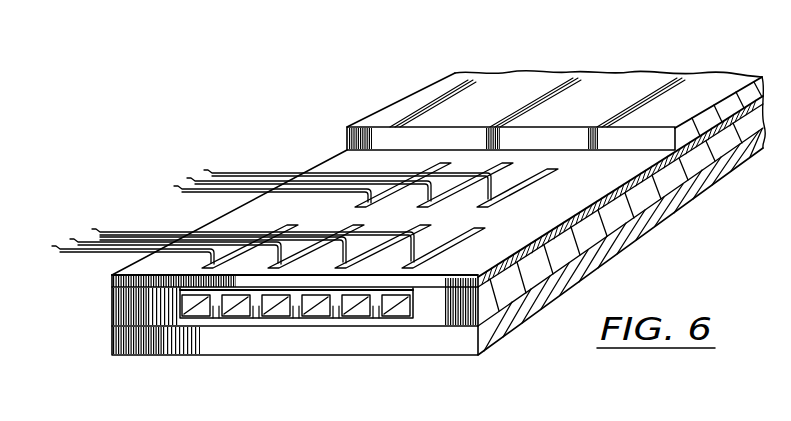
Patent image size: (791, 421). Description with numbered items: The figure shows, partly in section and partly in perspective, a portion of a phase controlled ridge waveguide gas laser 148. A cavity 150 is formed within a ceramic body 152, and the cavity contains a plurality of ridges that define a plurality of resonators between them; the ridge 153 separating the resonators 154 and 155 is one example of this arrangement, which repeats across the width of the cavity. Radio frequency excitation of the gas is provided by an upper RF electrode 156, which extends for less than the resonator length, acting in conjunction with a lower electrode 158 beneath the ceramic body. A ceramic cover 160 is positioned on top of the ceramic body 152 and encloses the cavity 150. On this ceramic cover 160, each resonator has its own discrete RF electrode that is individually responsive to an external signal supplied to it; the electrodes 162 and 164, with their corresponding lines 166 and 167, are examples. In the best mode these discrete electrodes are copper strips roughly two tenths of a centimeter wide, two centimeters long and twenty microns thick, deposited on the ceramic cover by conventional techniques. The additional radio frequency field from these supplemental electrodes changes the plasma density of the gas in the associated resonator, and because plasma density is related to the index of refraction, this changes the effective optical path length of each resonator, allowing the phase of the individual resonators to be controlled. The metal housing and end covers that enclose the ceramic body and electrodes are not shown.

The phase controlled ridge waveguide gas laser 148 is at (212, 104).
The cavity 150 is at (424, 312).
The ceramic body 152 is at (112, 305).
The ridge 153 is at (211, 321).
The resonator 154 is at (200, 320).
The resonator 155 is at (241, 320).
The upper RF electrode 156 is at (652, 77).
The lower electrode 158 is at (465, 352).
The ceramic cover 160 is at (333, 160).
The electrode 162 is at (477, 227).
The electrode 164 is at (546, 165).
The line 166 is at (418, 244).
The line 167 is at (492, 185).